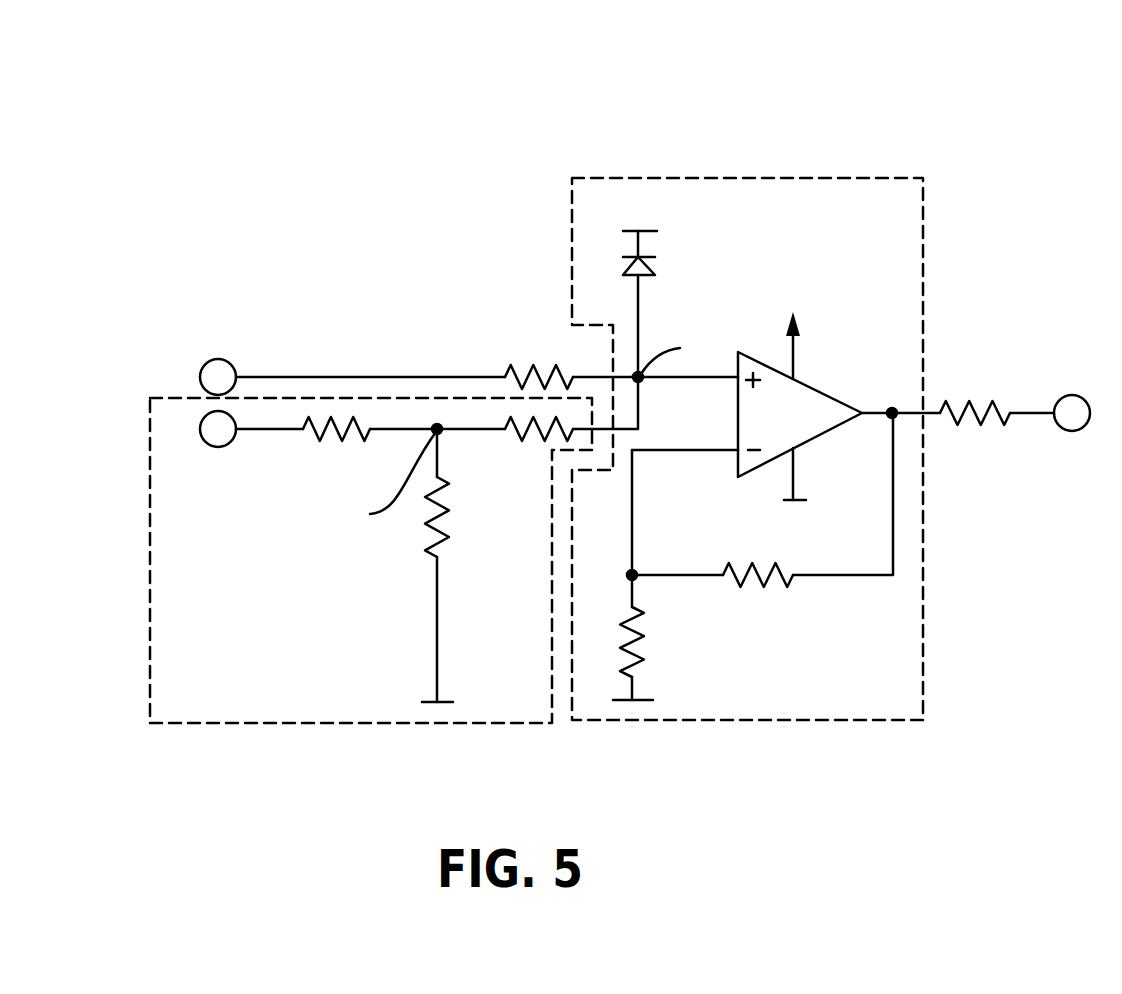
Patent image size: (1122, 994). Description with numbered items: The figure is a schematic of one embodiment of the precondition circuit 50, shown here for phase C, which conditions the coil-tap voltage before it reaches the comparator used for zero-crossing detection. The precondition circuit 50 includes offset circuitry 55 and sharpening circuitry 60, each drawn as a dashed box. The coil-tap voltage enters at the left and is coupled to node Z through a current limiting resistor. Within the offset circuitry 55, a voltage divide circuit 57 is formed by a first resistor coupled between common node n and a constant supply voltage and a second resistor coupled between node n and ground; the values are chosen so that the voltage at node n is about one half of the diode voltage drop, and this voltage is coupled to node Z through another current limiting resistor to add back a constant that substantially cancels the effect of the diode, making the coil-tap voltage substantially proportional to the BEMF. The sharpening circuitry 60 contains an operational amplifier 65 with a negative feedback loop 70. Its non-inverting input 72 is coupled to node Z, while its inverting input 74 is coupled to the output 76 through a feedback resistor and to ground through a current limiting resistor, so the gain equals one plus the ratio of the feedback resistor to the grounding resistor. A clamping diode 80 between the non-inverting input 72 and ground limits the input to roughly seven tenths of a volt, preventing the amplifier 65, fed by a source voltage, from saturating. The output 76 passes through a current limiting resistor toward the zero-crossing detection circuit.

The precondition circuit 50 is at (762, 100).
The offset circuitry 55 is at (417, 723).
The voltage divide circuit 57 is at (397, 540).
The sharpening circuitry 60 is at (700, 720).
The operational amplifier 65 is at (808, 407).
The negative feedback loop 70 is at (773, 633).
The non-inverting input 72 is at (737, 378).
The inverting input 74 is at (737, 451).
The output 76 is at (900, 414).
The clamping diode 80 is at (654, 266).